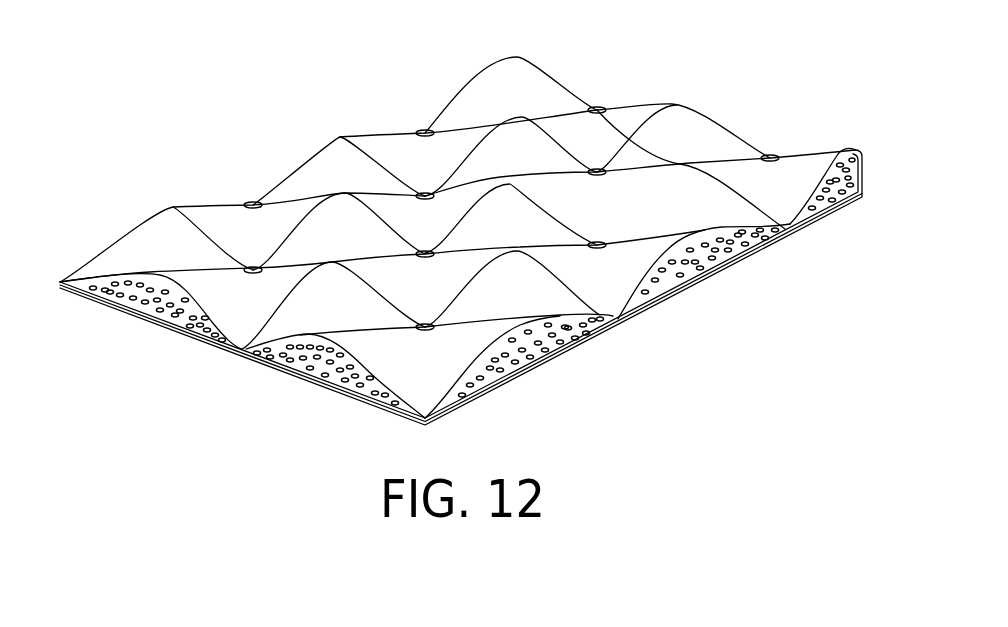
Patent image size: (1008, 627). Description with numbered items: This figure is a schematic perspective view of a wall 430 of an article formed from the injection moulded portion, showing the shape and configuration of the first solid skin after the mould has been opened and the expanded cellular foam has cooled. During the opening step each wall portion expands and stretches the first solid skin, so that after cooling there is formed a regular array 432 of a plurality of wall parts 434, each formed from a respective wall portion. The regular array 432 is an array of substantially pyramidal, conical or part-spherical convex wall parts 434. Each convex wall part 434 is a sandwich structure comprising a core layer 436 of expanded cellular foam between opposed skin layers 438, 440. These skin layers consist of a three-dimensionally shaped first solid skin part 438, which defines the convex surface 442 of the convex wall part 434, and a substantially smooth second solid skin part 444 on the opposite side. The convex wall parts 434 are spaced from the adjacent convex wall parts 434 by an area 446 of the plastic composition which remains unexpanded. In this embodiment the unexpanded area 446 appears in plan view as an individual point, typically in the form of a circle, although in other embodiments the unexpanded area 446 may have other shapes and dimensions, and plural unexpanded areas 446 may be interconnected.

The wall 430 is at (207, 217).
The regular array 432 is at (485, 162).
The wall part 434 is at (586, 111).
The core layer 436 is at (532, 345).
The first solid skin part 438 is at (304, 170).
The skin layer 440 is at (330, 358).
The convex surface 442 is at (637, 120).
The second solid skin part 444 is at (716, 255).
The unexpanded area 446 is at (598, 244).